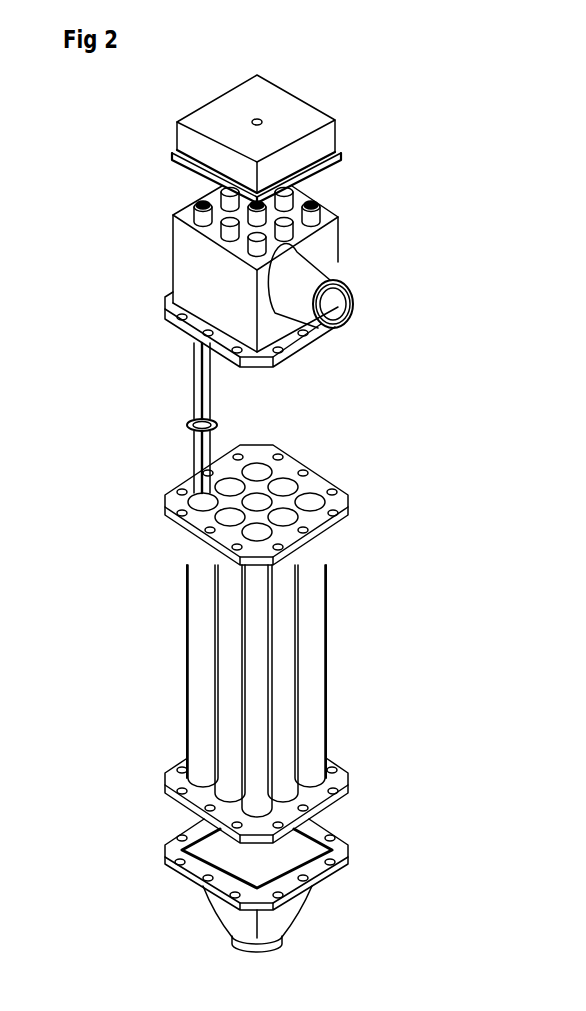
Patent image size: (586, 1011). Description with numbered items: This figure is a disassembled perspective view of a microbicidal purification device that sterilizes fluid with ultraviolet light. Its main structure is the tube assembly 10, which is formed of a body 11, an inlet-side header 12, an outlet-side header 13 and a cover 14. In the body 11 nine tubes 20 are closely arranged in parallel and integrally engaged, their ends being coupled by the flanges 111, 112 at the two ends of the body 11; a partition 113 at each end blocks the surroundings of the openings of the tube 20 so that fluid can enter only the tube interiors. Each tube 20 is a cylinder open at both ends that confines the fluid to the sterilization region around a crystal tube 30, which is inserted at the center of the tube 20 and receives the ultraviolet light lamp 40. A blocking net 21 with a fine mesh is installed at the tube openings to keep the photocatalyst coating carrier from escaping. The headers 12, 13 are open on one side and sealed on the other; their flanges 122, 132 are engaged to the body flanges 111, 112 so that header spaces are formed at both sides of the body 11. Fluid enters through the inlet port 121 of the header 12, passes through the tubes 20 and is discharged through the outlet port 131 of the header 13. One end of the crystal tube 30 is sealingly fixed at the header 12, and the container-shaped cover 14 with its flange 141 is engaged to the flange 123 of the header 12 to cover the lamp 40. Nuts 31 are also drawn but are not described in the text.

The tube assembly 10 is at (437, 281).
The body 11 is at (300, 634).
The flange 111 is at (297, 495).
The flange 112 is at (348, 787).
The partition 113 is at (284, 485).
The header 12 is at (306, 269).
The inlet port 121 is at (345, 318).
The flange 122 is at (300, 362).
The flange 123 is at (340, 225).
The header 13 is at (302, 896).
The outlet port 131 is at (302, 954).
The flange 132 is at (348, 852).
The cover 14 is at (335, 128).
The flange 141 is at (340, 158).
The tube 20 is at (325, 655).
The blocking net 21 is at (186, 425).
The crystal tube 30 is at (192, 350).
The nuts 31 is at (318, 203).
The ultraviolet light lamp 40 is at (198, 203).